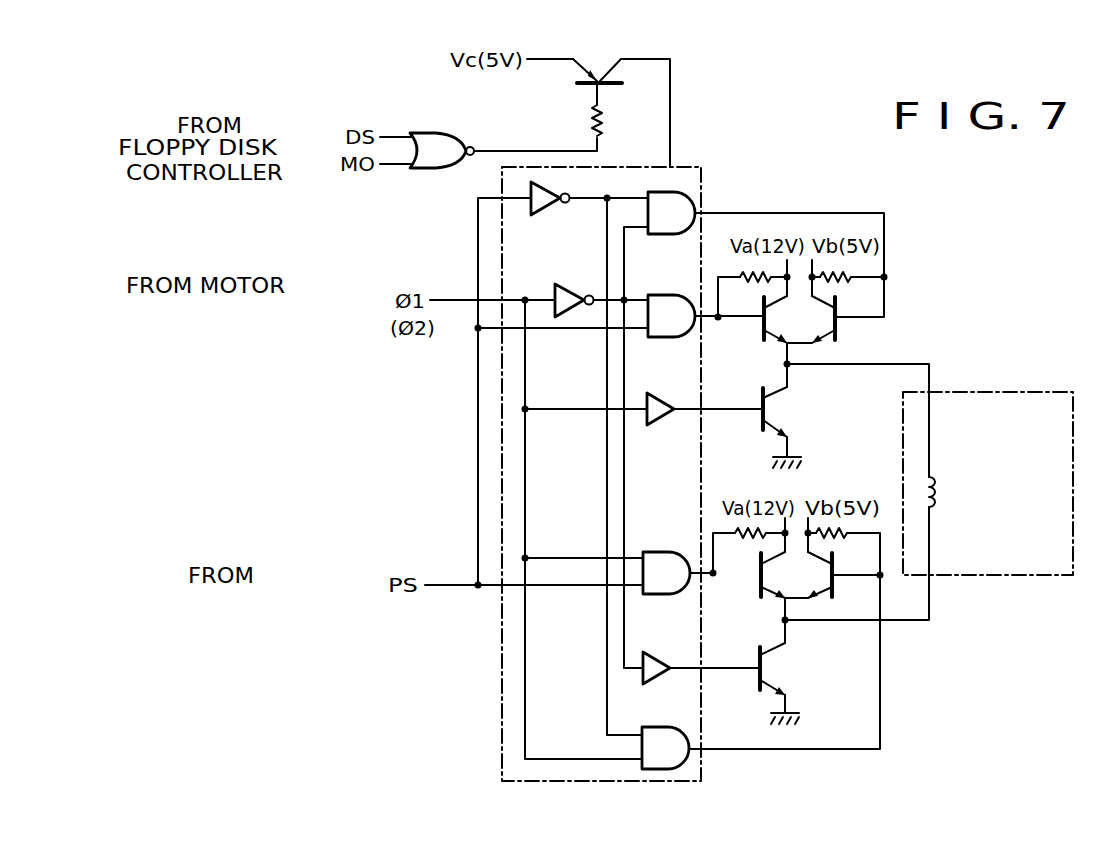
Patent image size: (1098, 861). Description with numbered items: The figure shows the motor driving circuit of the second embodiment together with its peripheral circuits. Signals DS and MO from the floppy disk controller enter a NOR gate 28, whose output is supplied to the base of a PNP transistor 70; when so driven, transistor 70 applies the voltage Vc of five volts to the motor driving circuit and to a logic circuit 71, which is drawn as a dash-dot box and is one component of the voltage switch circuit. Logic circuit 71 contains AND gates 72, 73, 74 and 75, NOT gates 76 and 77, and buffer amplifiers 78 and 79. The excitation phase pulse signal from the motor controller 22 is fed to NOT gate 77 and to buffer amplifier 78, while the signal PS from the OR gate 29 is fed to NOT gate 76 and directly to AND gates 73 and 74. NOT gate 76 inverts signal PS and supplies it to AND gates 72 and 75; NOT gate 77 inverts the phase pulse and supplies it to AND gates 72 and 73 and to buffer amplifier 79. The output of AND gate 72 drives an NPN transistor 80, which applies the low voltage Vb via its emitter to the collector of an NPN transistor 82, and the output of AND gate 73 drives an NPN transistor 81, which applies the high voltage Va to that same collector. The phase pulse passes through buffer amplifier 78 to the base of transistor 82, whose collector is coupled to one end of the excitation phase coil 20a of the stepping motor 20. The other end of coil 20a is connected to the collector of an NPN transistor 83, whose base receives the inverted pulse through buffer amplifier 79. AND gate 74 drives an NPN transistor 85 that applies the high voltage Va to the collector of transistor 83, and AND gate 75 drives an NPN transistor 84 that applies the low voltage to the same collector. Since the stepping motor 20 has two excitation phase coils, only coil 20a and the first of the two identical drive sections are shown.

The PNP transistor 70 is at (600, 80).
The NOR gate 28 is at (448, 135).
The logic circuit 71 is at (701, 168).
The AND gate 72 is at (696, 208).
The AND gate 73 is at (663, 295).
The AND gate 74 is at (655, 552).
The AND gate 75 is at (660, 727).
The NOT gate 76 is at (565, 203).
The NOT gate 77 is at (560, 286).
The buffer amplifier 78 is at (662, 395).
The buffer amplifier 79 is at (657, 652).
The NPN transistor 80 is at (840, 330).
The NPN transistor 81 is at (762, 340).
The NPN transistor 82 is at (777, 407).
The NPN transistor 83 is at (775, 665).
The NPN transistor 84 is at (833, 585).
The NPN transistor 85 is at (762, 592).
The stepping motor 20 is at (988, 509).
The excitation phase coil 20a is at (936, 493).
The motor controller 22 is at (336, 307).
The OR gate 29 is at (380, 597).